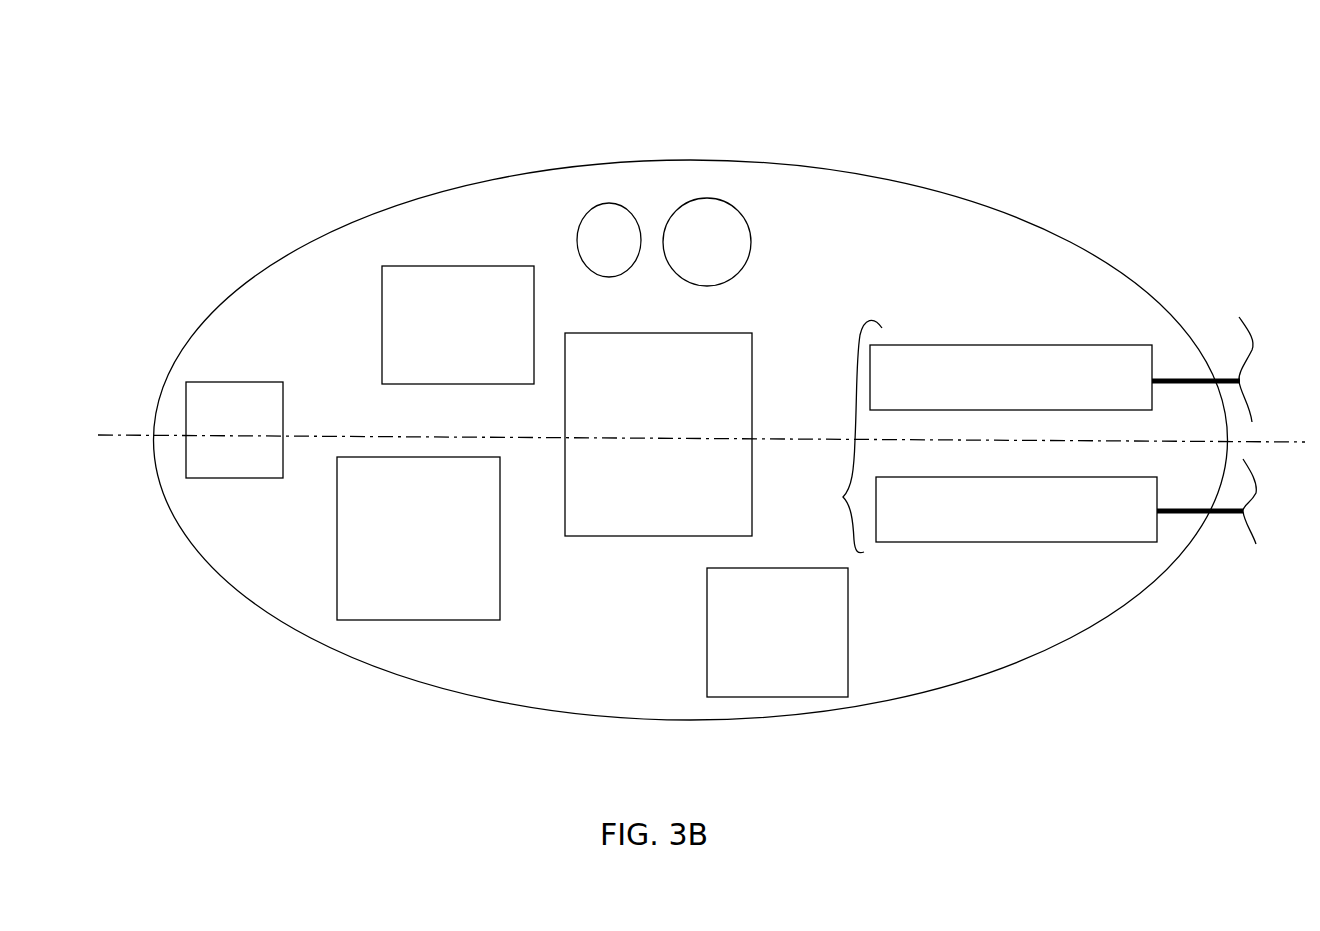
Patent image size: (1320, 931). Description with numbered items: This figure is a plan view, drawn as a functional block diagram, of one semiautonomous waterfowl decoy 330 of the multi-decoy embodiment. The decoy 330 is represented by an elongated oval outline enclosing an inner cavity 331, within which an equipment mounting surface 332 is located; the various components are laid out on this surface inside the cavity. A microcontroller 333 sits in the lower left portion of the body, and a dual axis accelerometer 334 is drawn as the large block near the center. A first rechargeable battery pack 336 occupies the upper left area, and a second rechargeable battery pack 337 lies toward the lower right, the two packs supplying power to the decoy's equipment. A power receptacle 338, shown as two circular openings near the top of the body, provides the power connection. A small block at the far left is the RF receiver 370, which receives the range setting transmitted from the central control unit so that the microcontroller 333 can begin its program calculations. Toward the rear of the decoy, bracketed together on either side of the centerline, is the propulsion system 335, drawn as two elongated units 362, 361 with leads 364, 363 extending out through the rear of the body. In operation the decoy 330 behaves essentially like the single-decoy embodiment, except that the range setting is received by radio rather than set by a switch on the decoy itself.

The semiautonomous waterfowl decoy 330 is at (969, 152).
The inner cavity 331 is at (240, 532).
The equipment mounting surface 332 is at (893, 280).
The microcontroller 333 is at (400, 585).
The dual axis accelerometer 334 is at (620, 512).
The propulsion system 335 is at (850, 497).
The first rechargeable battery pack 336 is at (392, 308).
The second rechargeable battery pack 337 is at (827, 633).
The power receptacle 338 is at (687, 225).
The electrode terminal 361 is at (1010, 527).
The electrode terminal 362 is at (990, 357).
The lead connector 363 is at (1256, 548).
The lead connector 364 is at (1256, 344).
The RF receiver 370 is at (228, 403).